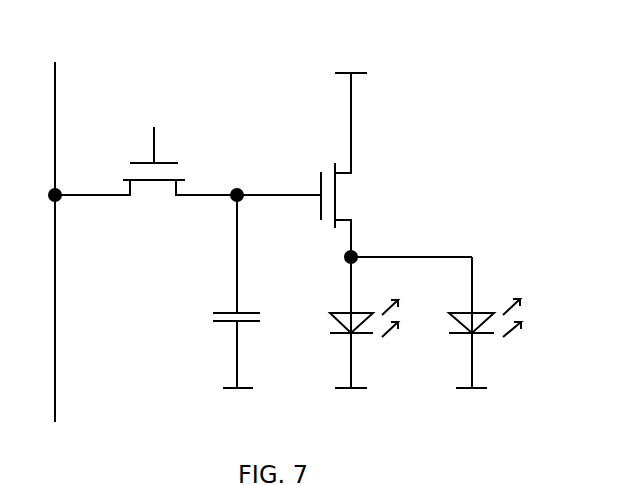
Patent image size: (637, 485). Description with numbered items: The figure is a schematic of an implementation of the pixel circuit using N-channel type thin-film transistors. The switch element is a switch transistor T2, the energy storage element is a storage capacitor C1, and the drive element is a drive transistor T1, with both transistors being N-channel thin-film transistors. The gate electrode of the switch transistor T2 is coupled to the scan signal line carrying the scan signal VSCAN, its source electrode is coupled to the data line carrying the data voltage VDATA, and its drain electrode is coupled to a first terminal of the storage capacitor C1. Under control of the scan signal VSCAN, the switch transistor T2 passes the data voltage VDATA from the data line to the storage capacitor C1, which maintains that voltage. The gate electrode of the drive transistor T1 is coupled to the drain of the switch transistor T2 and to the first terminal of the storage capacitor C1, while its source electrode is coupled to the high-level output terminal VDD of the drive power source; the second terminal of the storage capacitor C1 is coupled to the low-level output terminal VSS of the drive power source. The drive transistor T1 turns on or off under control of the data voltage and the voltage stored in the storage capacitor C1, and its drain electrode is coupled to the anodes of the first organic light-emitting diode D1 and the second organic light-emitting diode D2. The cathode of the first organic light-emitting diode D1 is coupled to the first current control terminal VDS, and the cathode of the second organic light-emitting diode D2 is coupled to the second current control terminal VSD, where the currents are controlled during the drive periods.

The drive transistor T1 is at (349, 208).
The switch transistor T2 is at (146, 191).
The storage capacitor C1 is at (220, 291).
The first organic light-emitting diode D1 is at (345, 344).
The second organic light-emitting diode D2 is at (467, 343).
The data voltage VDATA is at (63, 226).
The scan signal voltage VSCAN is at (164, 126).
The power supply voltage VDD is at (349, 106).
The ground voltage VSS is at (241, 406).
The first current control terminal VDS is at (356, 406).
The second current control terminal VSD is at (479, 406).